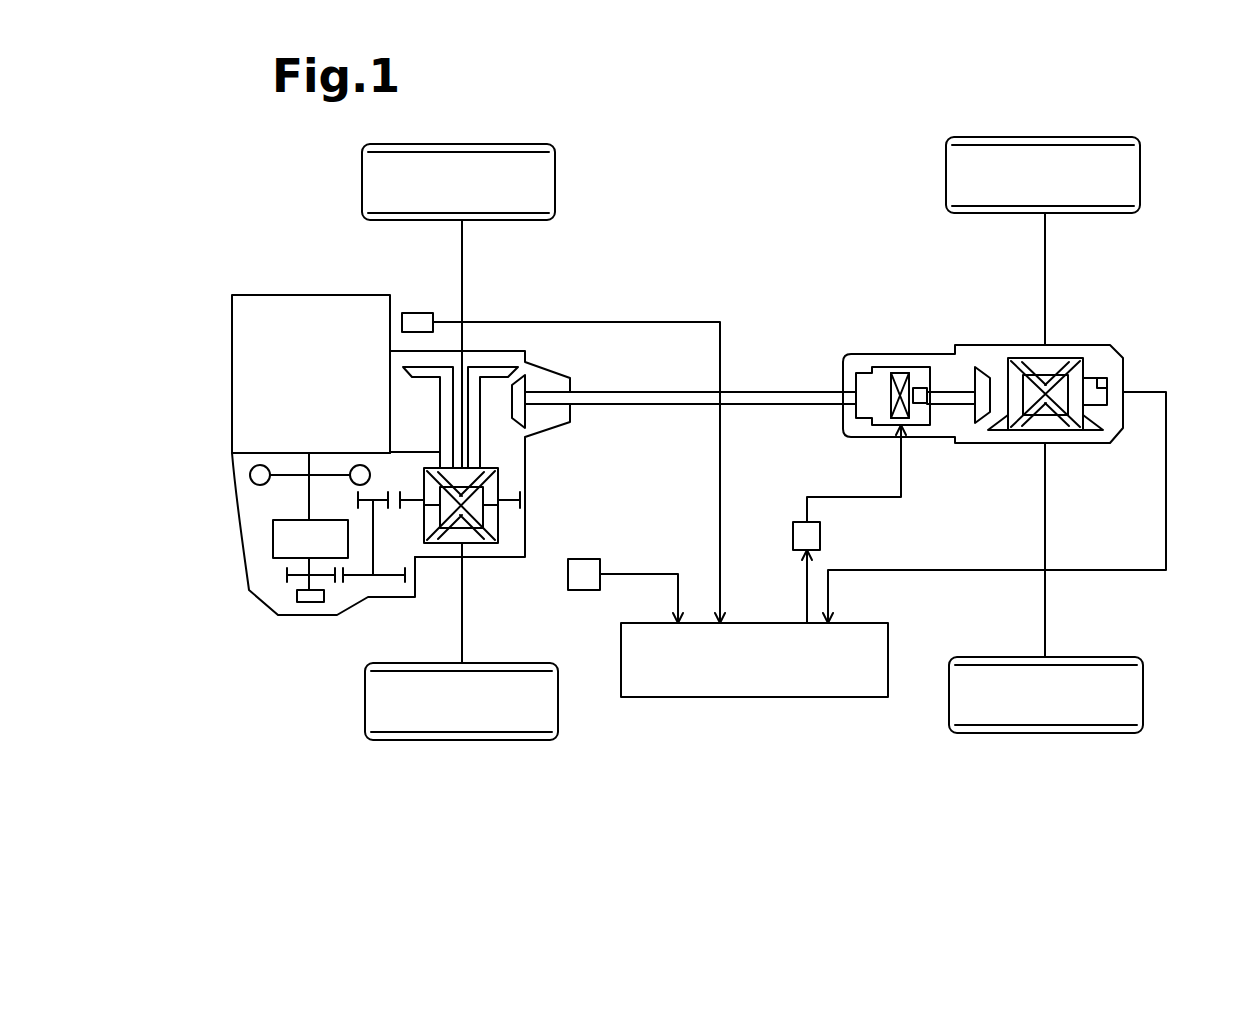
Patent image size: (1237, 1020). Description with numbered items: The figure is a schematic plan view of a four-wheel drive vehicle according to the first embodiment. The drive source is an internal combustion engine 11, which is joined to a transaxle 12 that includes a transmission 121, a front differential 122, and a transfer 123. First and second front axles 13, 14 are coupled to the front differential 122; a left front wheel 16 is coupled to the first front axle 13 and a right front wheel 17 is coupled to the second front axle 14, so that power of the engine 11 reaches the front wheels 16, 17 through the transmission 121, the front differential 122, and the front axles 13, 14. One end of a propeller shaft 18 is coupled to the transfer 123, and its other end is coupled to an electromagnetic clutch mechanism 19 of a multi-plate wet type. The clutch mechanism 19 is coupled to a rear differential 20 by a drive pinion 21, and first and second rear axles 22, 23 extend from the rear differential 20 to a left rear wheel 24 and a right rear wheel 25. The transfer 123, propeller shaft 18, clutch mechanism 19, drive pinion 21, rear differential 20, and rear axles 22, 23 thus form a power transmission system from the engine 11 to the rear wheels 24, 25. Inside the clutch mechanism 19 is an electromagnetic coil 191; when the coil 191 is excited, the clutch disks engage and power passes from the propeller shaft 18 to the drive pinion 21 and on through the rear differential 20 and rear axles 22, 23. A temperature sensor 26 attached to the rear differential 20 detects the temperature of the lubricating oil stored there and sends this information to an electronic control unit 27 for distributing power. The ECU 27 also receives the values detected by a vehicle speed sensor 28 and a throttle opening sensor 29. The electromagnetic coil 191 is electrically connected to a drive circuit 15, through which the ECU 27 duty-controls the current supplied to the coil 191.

The internal combustion engine 11 is at (285, 300).
The transaxle 12 is at (297, 569).
The transmission 121 is at (252, 502).
The front differential 122 is at (505, 525).
The transfer 123 is at (504, 443).
The first front axle 13 is at (462, 628).
The second front axle 14 is at (462, 245).
The drive circuit 15 is at (820, 530).
The left front wheel 16 is at (365, 712).
The right front wheel 17 is at (362, 168).
The propeller shaft 18 is at (673, 395).
The electromagnetic clutch mechanism 19 is at (872, 387).
The electromagnetic coil 191 is at (902, 372).
The rear differential 20 is at (999, 465).
The drive pinion 21 is at (963, 392).
The first rear axle 22 is at (1045, 497).
The second rear axle 23 is at (1044, 270).
The left rear wheel 24 is at (1143, 690).
The right rear wheel 25 is at (1140, 175).
The temperature sensor 26 is at (1100, 378).
The electronic control unit 27 is at (754, 660).
The vehicle speed sensor 28 is at (582, 592).
The throttle opening sensor 29 is at (420, 313).